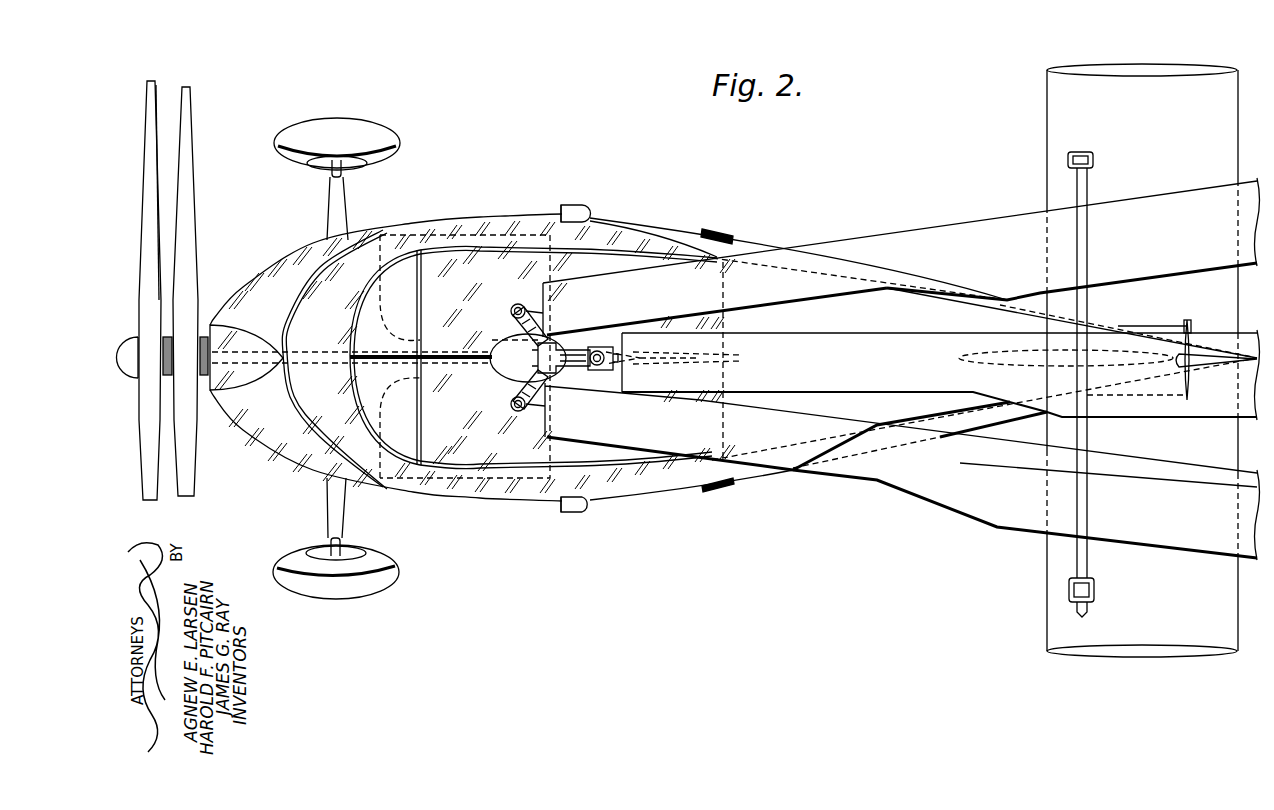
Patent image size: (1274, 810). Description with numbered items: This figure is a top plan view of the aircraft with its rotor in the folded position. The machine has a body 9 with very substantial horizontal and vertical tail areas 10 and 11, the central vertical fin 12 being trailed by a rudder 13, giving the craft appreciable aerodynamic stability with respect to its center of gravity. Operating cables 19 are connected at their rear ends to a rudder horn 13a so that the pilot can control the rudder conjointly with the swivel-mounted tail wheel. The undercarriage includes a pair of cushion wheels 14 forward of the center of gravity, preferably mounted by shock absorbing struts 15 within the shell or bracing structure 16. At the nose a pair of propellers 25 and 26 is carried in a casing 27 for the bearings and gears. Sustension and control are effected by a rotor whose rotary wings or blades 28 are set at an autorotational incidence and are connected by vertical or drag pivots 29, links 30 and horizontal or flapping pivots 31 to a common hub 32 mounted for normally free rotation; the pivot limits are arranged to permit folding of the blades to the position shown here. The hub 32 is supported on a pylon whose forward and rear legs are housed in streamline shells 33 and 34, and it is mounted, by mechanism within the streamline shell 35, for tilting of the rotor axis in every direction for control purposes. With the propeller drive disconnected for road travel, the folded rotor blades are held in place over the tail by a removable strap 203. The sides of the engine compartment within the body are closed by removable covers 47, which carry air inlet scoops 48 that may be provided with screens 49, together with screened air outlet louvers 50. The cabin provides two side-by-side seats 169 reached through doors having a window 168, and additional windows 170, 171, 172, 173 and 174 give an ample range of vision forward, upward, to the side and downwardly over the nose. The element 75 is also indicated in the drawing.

The body 9 is at (776, 480).
The horizontal tail area 10 is at (1105, 372).
The vertical tail area 11 is at (1120, 68).
The central vertical fin 12 is at (983, 352).
The rudder 13 is at (1213, 367).
The rudder horn 13a is at (1191, 322).
The cushion wheels 14 is at (352, 121).
The shock absorbing struts 15 is at (341, 170).
The shell or bracing structure 16 is at (330, 217).
The operating cables 19 is at (1149, 324).
The propeller 25 is at (188, 118).
The propeller 26 is at (152, 88).
The casing 27 is at (240, 372).
The rotary wings or blades 28 is at (960, 216).
The vertical or drag pivots 29 is at (514, 304).
The links 30 is at (547, 324).
The horizontal or flapping pivots 31 is at (520, 368).
The hub 32 is at (552, 346).
The streamline shell 33 is at (433, 352).
The streamline shell 34 is at (645, 364).
The streamline shell 35 is at (603, 369).
The removable covers 47 is at (650, 224).
The air inlet scoops 48 is at (586, 210).
The screens 49 is at (560, 214).
The screened air outlet louvers 50 is at (722, 232).
The engine mount 75 is at (330, 370).
The window 168 is at (448, 493).
The side-by-side seats 169 is at (485, 232).
The window 170 is at (300, 313).
The window 171 is at (617, 238).
The window 172 is at (533, 355).
The window 173 is at (565, 441).
The window 174 is at (733, 324).
The removable strap 203 is at (1090, 235).